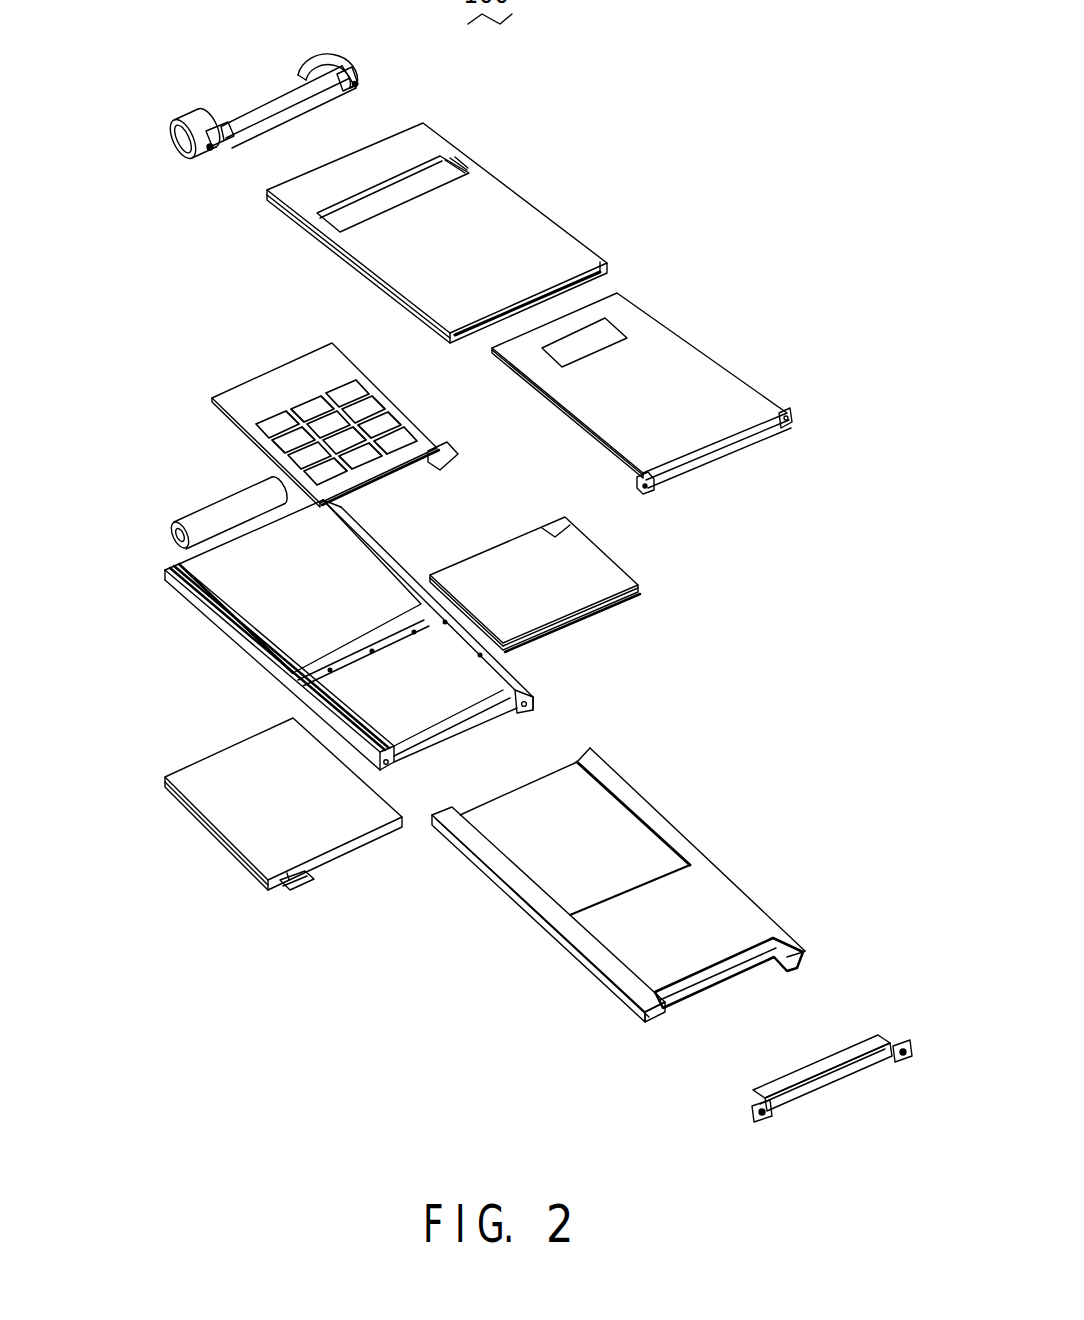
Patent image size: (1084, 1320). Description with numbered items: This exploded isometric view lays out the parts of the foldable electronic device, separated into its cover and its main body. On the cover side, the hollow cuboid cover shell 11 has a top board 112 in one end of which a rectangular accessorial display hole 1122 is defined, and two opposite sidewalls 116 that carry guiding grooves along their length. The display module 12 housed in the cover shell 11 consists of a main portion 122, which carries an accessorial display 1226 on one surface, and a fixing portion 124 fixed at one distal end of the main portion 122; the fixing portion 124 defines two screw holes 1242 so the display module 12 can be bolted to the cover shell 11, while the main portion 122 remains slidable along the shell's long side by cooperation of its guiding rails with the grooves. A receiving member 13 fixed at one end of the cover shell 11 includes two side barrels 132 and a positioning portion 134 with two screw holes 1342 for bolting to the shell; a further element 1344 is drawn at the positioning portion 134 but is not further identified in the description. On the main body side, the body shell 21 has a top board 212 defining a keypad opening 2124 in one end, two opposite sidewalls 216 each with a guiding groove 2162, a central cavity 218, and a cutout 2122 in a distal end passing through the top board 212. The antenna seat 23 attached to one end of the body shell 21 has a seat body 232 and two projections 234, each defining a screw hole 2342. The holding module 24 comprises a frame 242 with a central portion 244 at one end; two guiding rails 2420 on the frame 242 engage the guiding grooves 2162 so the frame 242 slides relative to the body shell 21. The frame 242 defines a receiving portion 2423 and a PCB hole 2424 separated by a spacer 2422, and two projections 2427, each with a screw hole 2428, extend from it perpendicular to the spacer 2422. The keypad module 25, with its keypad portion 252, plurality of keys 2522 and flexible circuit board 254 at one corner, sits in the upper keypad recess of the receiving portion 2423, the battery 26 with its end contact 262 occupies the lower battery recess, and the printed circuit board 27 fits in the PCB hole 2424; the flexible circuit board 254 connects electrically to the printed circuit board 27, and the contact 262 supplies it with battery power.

The receiving member 13 is at (266, 122).
The side barrels 132 is at (182, 114).
The positioning portion 134 is at (240, 135).
The screw holes 1342 is at (356, 70).
The hook 1344 is at (350, 90).
The cover shell 11 is at (423, 214).
The top board 112 is at (532, 240).
The accessorial display hole 1122 is at (410, 183).
The sidewalls 116 is at (298, 222).
The display module 12 is at (686, 381).
The main portion 122 is at (670, 358).
The accessorial display 1226 is at (615, 330).
The fixing portion 124 is at (758, 460).
The screw holes 1242 is at (785, 425).
The keypad module 25 is at (327, 401).
The keypad portion 252 is at (275, 383).
The keys 2522 is at (373, 405).
The flexible circuit board 254 is at (450, 456).
The holding module 24 is at (365, 612).
The frame 242 is at (365, 635).
The guiding rails 2420 is at (213, 622).
The spacer 2422 is at (280, 675).
The receiving portion 2423 is at (365, 570).
The PCB hole 2424 is at (470, 682).
The projections 2427 is at (528, 696).
The screw hole 2428 is at (528, 708).
The central portion 244 is at (210, 520).
The printed circuit board 27 is at (588, 565).
The battery 26 is at (268, 845).
The contact 262 is at (293, 890).
The body shell 21 is at (669, 917).
The top board 212 is at (737, 915).
The keypad opening 2124 is at (620, 888).
The sidewalls 216 is at (560, 945).
The cavity 218 is at (698, 980).
The cutout 2122 is at (740, 983).
The guiding groove 2162 is at (805, 958).
The antenna seat 23 is at (786, 1080).
The seat body 232 is at (850, 1065).
The projections 234 is at (760, 1127).
The screw hole 2342 is at (758, 1122).